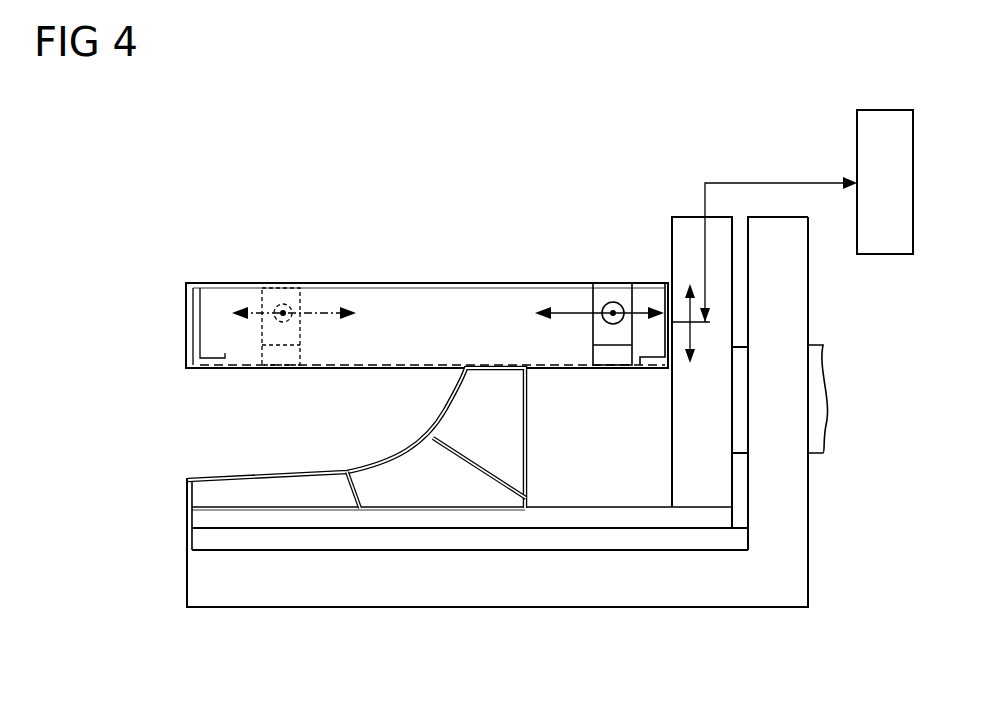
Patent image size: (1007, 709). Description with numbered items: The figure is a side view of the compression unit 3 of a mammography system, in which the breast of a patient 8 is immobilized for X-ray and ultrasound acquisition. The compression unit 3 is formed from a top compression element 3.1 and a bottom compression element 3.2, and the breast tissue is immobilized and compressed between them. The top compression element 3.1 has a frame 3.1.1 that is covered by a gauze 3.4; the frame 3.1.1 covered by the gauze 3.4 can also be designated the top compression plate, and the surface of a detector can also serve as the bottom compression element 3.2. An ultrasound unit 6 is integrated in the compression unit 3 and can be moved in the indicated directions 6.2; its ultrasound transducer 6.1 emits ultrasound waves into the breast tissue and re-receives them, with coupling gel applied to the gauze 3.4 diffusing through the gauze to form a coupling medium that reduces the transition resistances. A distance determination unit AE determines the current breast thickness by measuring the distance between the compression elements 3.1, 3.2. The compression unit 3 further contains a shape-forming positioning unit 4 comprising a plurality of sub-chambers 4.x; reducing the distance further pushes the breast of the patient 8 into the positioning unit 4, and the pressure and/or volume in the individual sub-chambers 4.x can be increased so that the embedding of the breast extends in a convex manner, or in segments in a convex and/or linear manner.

The compression unit 3 is at (90, 360).
The top compression element 3.1 is at (366, 283).
The frame 3.1.1 is at (193, 318).
The bottom compression element 3.2 is at (196, 517).
The gauze 3.4 is at (400, 365).
The positioning unit 4 is at (555, 430).
The sub-chamber 4.x is at (278, 497).
The ultrasound unit 6 is at (284, 300).
The ultrasound transducer 6.1 is at (593, 355).
The directions 6.2 is at (572, 313).
The patient 8 is at (240, 420).
The distance determination unit AE is at (890, 110).